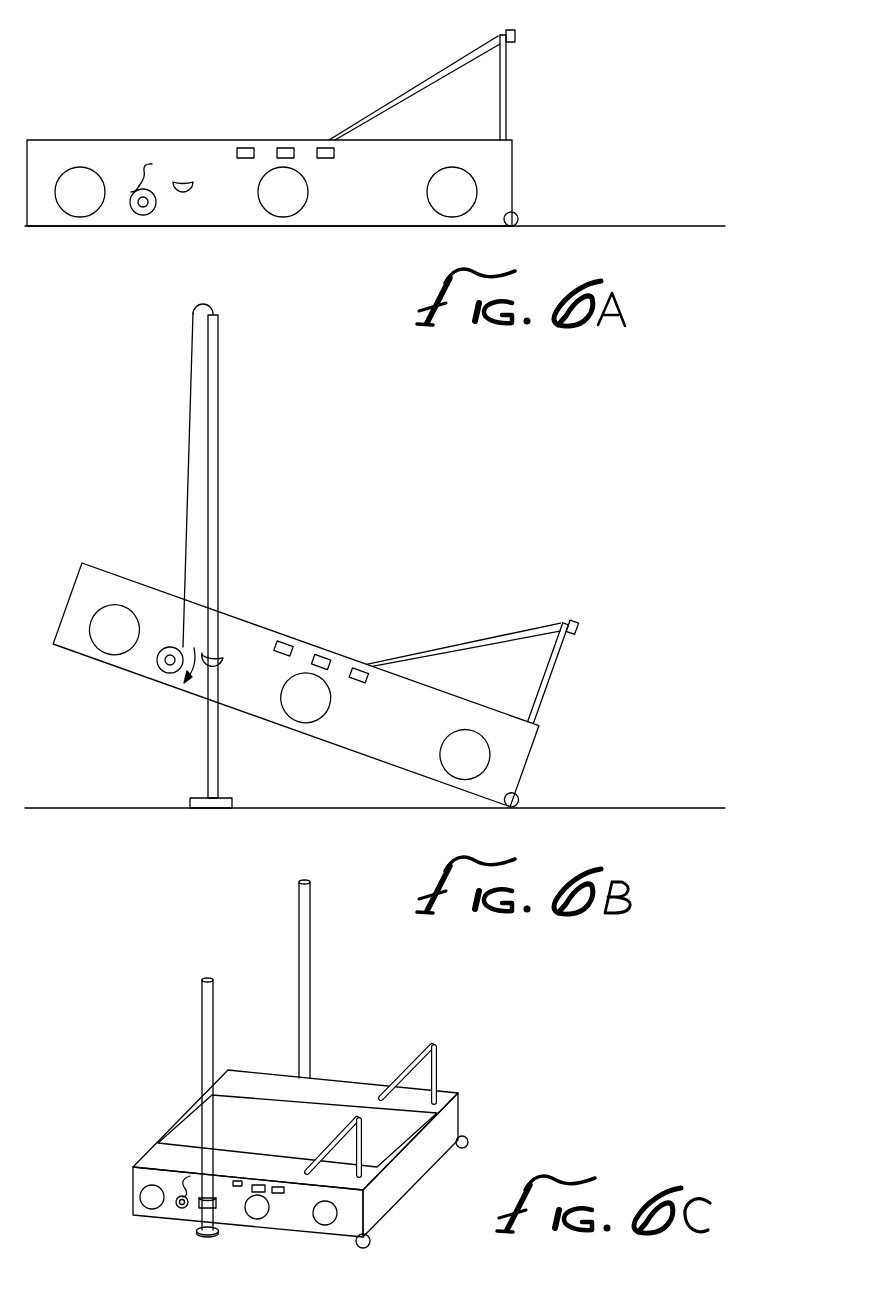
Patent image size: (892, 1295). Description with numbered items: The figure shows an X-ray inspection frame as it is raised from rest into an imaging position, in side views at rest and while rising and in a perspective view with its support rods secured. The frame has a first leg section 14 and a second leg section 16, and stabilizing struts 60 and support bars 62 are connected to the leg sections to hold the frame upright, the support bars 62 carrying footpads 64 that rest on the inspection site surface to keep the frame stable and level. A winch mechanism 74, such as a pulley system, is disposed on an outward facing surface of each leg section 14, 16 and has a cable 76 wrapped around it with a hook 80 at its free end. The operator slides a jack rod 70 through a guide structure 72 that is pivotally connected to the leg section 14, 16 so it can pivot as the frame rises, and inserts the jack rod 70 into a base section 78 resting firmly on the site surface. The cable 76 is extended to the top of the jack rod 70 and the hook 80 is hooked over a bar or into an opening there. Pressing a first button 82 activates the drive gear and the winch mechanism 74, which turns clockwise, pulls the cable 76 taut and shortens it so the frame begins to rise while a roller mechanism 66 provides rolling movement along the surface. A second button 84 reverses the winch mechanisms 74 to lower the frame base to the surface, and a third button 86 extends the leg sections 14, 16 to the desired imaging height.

In FIG. 6C, the first leg section 14 is at (332, 1090).
In FIG. 6A, the second leg section 16 is at (190, 157).
In FIG. 6B, the second leg section 16 is at (240, 635).
In FIG. 6C, the second leg section 16 is at (155, 1158).
In FIG. 6A, the stabilizing strut 60 is at (398, 98).
In FIG. 6B, the stabilizing strut 60 is at (483, 640).
In FIG. 6C, the stabilizing strut 60 is at (406, 1082).
In FIG. 6A, the support bar 62 is at (508, 95).
In FIG. 6B, the support bar 62 is at (558, 675).
In FIG. 6C, the support bar 62 is at (437, 1075).
In FIG. 6A, the footpad 64 is at (515, 33).
In FIG. 6B, the footpad 64 is at (576, 624).
In FIG. 6A, the roller mechanism 66 is at (518, 218).
In FIG. 6B, the roller mechanism 66 is at (522, 800).
In FIG. 6C, the roller mechanism 66 is at (466, 1138).
In FIG. 6B, the jack rod 70 is at (220, 380).
In FIG. 6C, the jack rod 70 is at (210, 1048).
In FIG. 6A, the guide structure 72 is at (183, 198).
In FIG. 6B, the guide structure 72 is at (222, 665).
In FIG. 6C, the guide structure 72 is at (207, 1203).
In FIG. 6A, the winch mechanism 74 is at (140, 210).
In FIG. 6B, the winch mechanism 74 is at (167, 672).
In FIG. 6C, the winch mechanism 74 is at (183, 1209).
In FIG. 6A, the cable 76 is at (140, 182).
In FIG. 6B, the cable 76 is at (190, 420).
In FIG. 6B, the base section 78 is at (233, 800).
In FIG. 6A, the hook 80 is at (150, 168).
In FIG. 6B, the hook 80 is at (208, 309).
In FIG. 6C, the hook 80 is at (186, 1186).
In FIG. 6A, the first button 82 is at (240, 148).
In FIG. 6B, the first button 82 is at (283, 645).
In FIG. 6A, the second button 84 is at (283, 148).
In FIG. 6B, the second button 84 is at (308, 657).
In FIG. 6A, the third button 86 is at (330, 160).
In FIG. 6B, the third button 86 is at (348, 668).